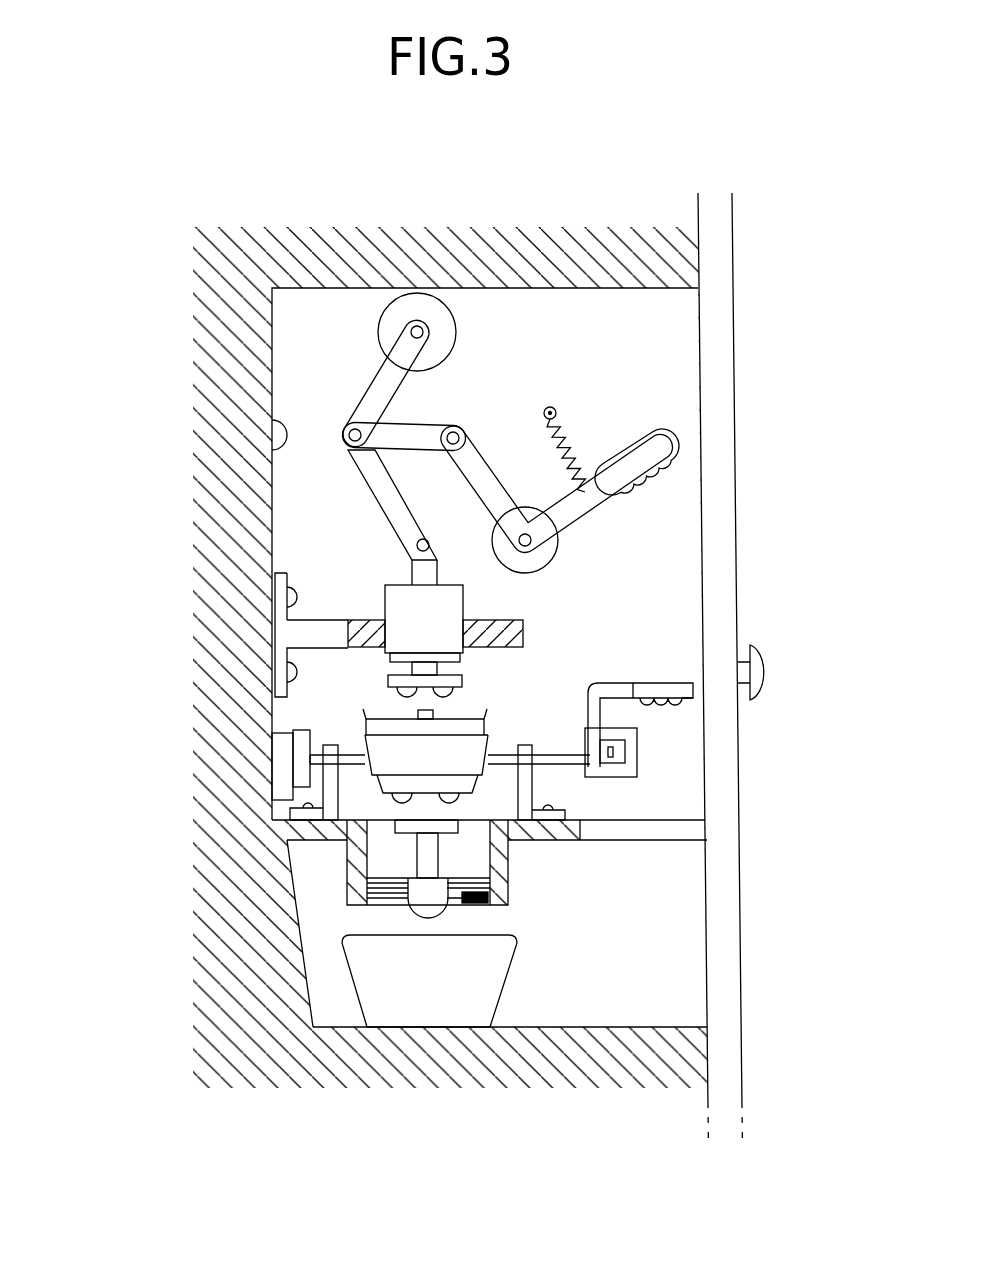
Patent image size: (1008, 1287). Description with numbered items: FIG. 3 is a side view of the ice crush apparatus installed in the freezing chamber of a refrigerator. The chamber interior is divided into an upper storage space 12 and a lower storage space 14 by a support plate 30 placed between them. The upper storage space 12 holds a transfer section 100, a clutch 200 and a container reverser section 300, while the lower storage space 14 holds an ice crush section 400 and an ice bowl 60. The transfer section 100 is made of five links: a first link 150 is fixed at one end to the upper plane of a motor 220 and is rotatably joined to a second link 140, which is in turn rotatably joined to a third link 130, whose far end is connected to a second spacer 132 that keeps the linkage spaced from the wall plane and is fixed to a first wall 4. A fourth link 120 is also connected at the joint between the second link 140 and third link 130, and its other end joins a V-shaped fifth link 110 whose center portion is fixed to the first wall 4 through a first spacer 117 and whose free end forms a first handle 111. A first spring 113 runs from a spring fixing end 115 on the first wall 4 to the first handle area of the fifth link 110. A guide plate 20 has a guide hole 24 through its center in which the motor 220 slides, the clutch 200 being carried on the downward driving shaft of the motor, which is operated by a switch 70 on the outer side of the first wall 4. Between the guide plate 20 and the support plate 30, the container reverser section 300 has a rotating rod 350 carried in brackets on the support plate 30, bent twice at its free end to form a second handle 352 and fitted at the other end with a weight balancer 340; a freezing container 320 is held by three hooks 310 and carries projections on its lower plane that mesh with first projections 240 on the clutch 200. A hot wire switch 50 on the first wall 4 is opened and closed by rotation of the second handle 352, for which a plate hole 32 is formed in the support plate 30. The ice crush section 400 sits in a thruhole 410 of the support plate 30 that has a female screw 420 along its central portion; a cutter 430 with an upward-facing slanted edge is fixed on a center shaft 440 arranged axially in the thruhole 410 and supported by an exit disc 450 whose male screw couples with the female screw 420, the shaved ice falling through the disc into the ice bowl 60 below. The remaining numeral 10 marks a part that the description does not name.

The first wall 4 is at (688, 468).
The housing body 10 is at (683, 602).
The upper storage space 12 is at (283, 443).
The lower storage space 14 is at (318, 1005).
The guide plate 20 is at (325, 633).
The guide hole 24 is at (455, 638).
The support plate 30 is at (573, 838).
The plate hole 32 is at (663, 828).
The hot wire switch 50 is at (640, 748).
The ice bowl 60 is at (448, 997).
The switch 70 is at (769, 676).
The transfer section 100 is at (458, 401).
The fifth link 110 is at (600, 510).
The first handle 111 is at (672, 436).
The first spring 113 is at (575, 468).
The spring fixing end 115 is at (552, 405).
The first spacer 117 is at (558, 550).
The fourth link 120 is at (425, 425).
The third link 130 is at (357, 412).
The second spacer 132 is at (428, 300).
The second link 140 is at (385, 500).
The first link 150 is at (412, 578).
The clutch 200 is at (356, 643).
The motor 220 is at (467, 635).
The first projections 240 is at (462, 690).
The container reverser section 300 is at (478, 739).
The hooks 310 is at (300, 740).
The freezing container 320 is at (310, 818).
The weight balancer 340 is at (300, 760).
The rotating rod 350 is at (500, 756).
The second handle 352 is at (682, 688).
The ice crush section 400 is at (487, 929).
The thruhole 410 is at (355, 885).
The female screw 420 is at (370, 855).
The cutter 430 is at (507, 840).
The center shaft 440 is at (507, 887).
The exit disc 450 is at (470, 907).